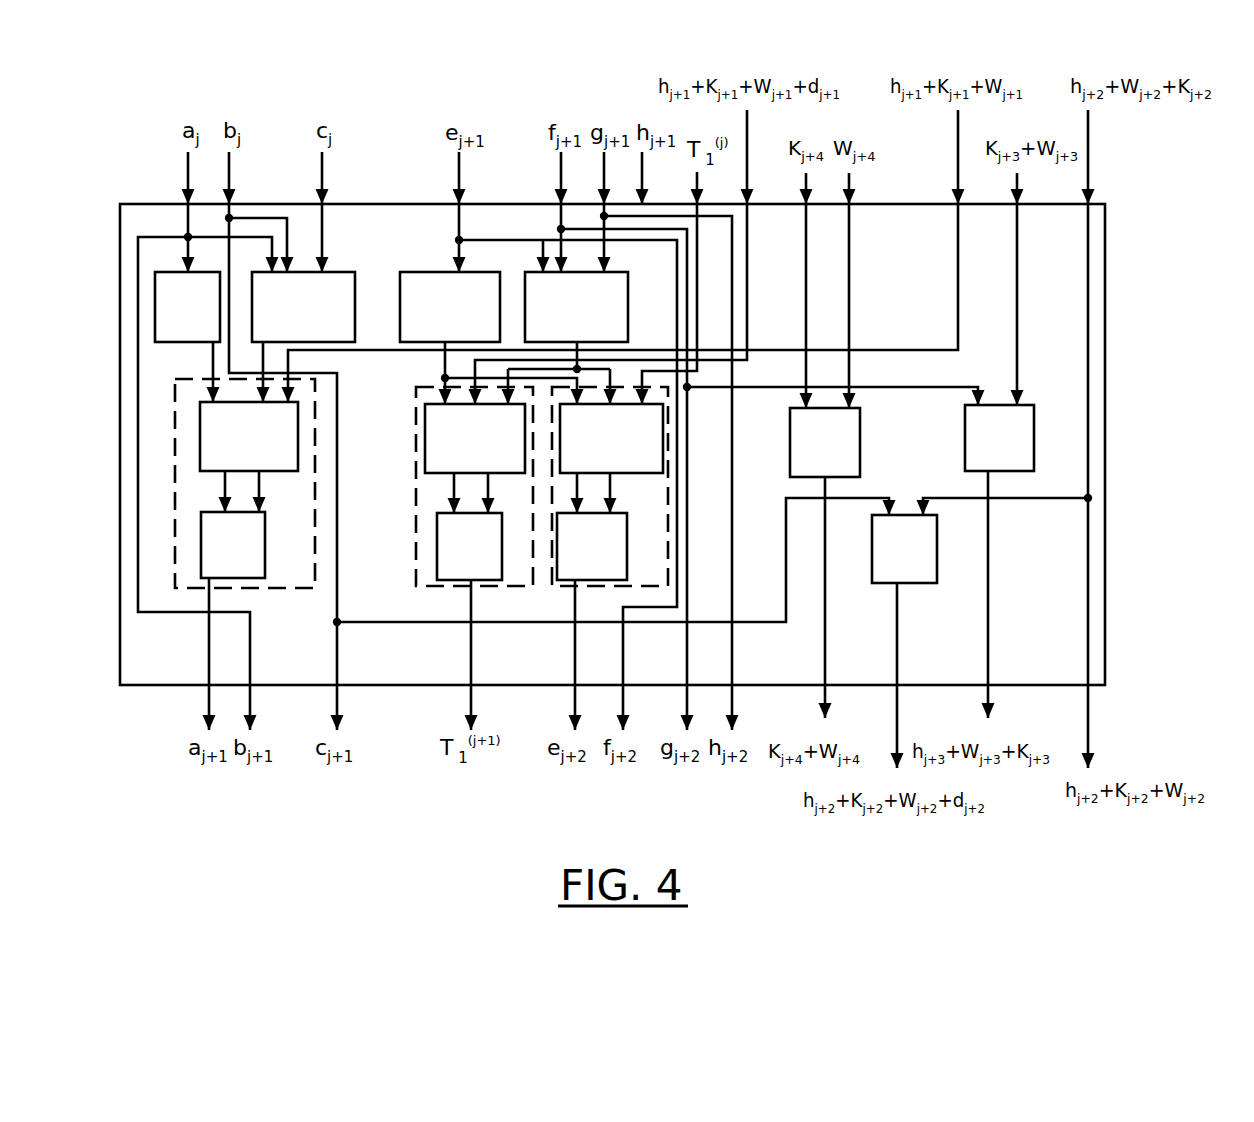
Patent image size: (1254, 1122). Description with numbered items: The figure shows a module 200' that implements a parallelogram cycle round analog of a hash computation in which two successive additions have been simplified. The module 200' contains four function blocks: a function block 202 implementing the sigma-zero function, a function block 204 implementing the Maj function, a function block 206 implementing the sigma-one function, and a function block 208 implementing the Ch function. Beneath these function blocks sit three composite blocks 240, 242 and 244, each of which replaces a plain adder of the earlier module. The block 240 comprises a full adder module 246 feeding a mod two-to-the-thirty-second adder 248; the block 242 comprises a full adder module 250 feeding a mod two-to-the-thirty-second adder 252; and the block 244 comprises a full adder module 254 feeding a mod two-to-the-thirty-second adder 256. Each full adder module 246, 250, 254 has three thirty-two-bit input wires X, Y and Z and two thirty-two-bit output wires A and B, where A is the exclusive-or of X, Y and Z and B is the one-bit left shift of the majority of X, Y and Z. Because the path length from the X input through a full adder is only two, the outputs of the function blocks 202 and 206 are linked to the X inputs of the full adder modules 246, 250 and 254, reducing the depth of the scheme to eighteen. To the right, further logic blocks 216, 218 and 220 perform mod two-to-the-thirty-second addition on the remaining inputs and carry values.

The module 200' is at (596, 430).
The function block 202 is at (200, 343).
The function block 204 is at (330, 272).
The function block 206 is at (455, 273).
The function block 208 is at (537, 273).
The logic block 216 is at (790, 440).
The logic block 218 is at (965, 434).
The logic block 220 is at (872, 550).
The block 240 is at (228, 483).
The block 242 is at (448, 480).
The block 244 is at (619, 499).
The full adder module 246 is at (262, 472).
The mod 2^32 adder 248 is at (266, 560).
The full adder module 250 is at (424, 438).
The mod 2^32 adder 252 is at (437, 548).
The full adder module 254 is at (665, 436).
The mod 2^32 adder 256 is at (628, 556).